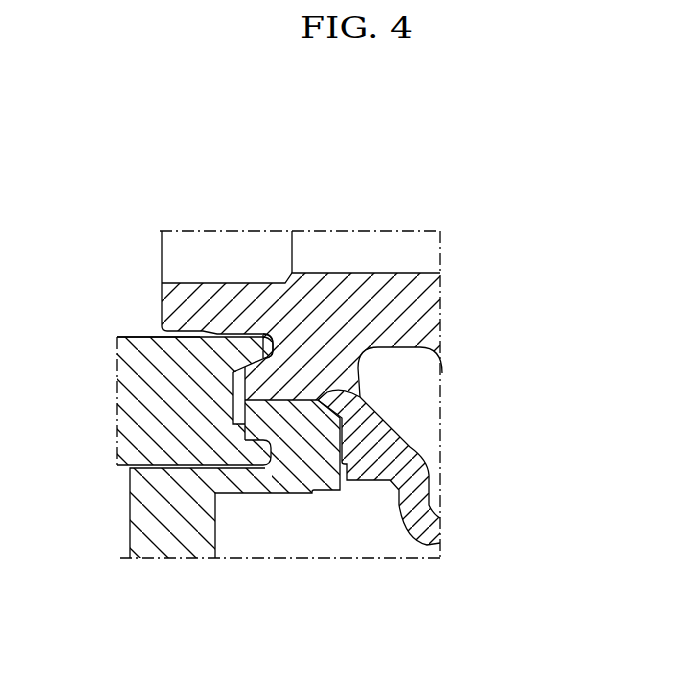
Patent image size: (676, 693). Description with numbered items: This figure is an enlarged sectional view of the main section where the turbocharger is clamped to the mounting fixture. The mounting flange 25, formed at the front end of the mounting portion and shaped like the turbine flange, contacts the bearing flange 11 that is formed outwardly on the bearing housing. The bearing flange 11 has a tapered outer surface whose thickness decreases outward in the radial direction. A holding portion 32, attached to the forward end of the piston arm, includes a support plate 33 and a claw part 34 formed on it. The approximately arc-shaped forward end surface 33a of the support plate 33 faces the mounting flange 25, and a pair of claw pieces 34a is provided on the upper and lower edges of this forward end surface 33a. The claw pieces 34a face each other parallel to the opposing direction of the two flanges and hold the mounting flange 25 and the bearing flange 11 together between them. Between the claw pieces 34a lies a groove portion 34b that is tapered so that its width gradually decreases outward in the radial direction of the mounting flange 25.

The bearing flange 11 is at (250, 368).
The mounting flange 25 is at (250, 425).
The holding portion 32 is at (137, 336).
The support plate 33 is at (310, 354).
The forward end surface 33a is at (238, 383).
The claw part 34 is at (408, 391).
The claw piece 34a is at (252, 345).
The groove portion 34b is at (236, 419).